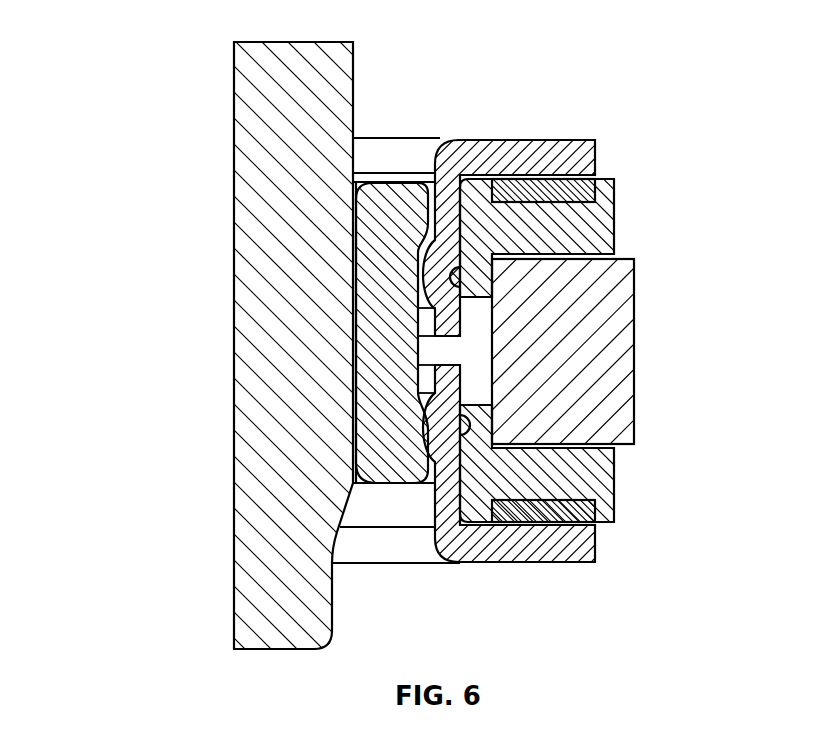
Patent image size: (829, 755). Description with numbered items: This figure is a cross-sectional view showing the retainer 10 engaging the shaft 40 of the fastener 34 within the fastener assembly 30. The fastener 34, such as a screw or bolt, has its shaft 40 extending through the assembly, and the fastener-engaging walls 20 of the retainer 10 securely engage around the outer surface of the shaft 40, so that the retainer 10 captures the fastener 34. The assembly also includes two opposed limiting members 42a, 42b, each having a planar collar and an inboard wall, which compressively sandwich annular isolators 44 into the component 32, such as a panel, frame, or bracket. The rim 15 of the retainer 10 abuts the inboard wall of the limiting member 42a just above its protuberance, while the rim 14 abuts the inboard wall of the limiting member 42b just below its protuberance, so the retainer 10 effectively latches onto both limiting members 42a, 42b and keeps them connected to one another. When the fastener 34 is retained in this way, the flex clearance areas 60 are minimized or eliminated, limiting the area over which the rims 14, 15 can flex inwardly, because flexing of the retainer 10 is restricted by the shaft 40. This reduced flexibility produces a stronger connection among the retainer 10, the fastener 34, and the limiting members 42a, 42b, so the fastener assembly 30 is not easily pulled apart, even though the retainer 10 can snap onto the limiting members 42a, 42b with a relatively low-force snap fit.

The fastener assembly 30 is at (414, 377).
The fastener 34 is at (300, 42).
The shaft 40 is at (353, 72).
The retainer 10 is at (414, 377).
The rim 15 is at (375, 190).
The rim 14 is at (403, 457).
The fastener-engaging walls 20 is at (382, 325).
The flex clearance areas 60 is at (354, 222).
The limiting member 42a is at (563, 140).
The limiting member 42b is at (563, 565).
The annular isolators 44 is at (614, 217).
The component 32 is at (634, 343).